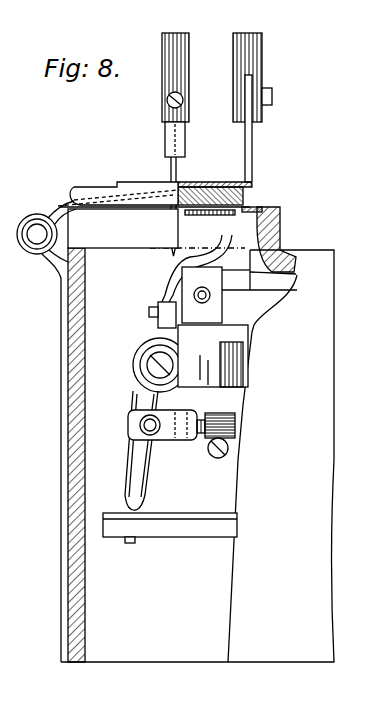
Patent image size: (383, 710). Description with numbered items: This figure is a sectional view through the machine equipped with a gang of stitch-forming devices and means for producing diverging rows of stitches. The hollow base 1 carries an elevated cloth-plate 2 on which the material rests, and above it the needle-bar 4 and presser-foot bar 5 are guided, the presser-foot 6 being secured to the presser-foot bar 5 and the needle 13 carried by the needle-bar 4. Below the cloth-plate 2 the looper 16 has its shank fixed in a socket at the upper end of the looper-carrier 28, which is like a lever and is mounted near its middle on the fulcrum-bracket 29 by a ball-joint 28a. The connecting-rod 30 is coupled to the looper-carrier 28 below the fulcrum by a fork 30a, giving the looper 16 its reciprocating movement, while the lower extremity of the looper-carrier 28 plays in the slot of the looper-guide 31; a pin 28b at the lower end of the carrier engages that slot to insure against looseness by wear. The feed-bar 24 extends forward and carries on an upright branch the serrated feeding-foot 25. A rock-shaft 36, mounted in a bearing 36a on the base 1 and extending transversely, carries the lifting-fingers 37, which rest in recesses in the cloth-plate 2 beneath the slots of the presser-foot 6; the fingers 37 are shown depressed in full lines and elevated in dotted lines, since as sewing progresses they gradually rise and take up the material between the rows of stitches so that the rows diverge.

The base 1 is at (197, 456).
The cloth-plate 2 is at (252, 200).
The needle-bar 4 is at (189, 66).
The presser-foot bar 5 is at (262, 68).
The presser-foot 6 is at (212, 186).
The needle 13 is at (171, 167).
The looper 16 is at (281, 215).
The feed-bar 24 is at (239, 286).
The feeding-foot 25 is at (245, 208).
The looper-carrier 28 is at (158, 326).
The ball-joint 28a is at (133, 375).
The pin 28b is at (130, 540).
The fulcrum-bracket 29 is at (203, 360).
The connecting-rod 30 is at (236, 426).
The fork 30a is at (170, 440).
The looper-guide 31 is at (189, 538).
The rock-shaft 36 is at (36, 214).
The bearing 36a is at (43, 262).
The lifting-fingers 37 is at (134, 212).